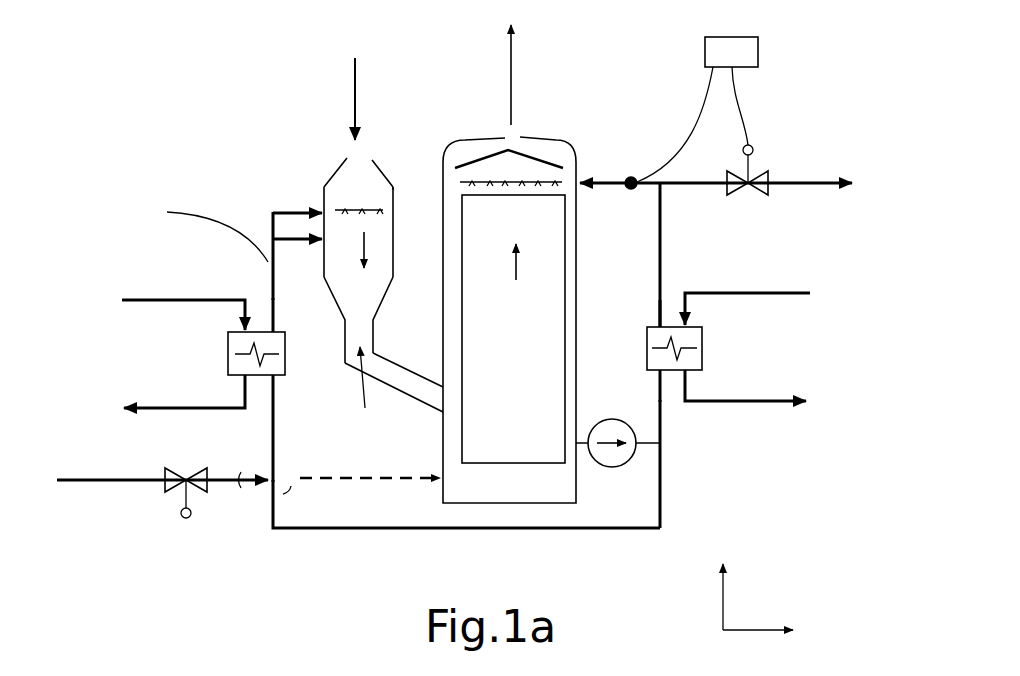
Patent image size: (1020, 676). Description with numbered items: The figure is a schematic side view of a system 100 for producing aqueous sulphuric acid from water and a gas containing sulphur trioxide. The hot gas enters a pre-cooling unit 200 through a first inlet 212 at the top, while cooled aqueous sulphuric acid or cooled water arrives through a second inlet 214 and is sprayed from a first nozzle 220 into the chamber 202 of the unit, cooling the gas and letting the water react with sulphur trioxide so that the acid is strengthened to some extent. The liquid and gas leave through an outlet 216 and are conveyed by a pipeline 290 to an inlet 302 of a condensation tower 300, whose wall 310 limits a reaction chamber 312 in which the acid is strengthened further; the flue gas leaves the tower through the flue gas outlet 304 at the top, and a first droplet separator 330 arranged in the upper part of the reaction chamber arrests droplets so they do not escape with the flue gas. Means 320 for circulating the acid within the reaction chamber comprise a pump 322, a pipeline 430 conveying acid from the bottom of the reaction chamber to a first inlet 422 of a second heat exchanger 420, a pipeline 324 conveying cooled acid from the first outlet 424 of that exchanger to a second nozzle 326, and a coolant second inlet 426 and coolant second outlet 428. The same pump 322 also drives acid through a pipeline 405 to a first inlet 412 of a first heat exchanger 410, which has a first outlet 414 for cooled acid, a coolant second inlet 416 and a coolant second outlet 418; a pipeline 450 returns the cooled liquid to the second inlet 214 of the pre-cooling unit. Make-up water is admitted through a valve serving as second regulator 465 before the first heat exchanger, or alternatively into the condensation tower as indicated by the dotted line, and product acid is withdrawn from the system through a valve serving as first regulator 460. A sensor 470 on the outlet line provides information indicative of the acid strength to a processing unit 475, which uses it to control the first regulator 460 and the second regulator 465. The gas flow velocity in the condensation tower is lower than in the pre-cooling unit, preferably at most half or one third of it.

The system 100 is at (222, 590).
The pre-cooling unit 200 is at (394, 228).
The reaction chamber 202 is at (352, 222).
The first inlet 212 is at (344, 154).
The second inlet 214 is at (320, 199).
The outlet 216 is at (349, 319).
The first nozzle 220 is at (363, 203).
The pipeline 290 is at (383, 355).
The condensation tower 300 is at (557, 143).
The inlet 302 is at (435, 396).
The flue outlet 304 is at (522, 129).
The wall 310 is at (578, 288).
The reaction chamber 312 is at (538, 346).
The means for circulating the aqueous sulphuric acid 320 is at (699, 453).
The pump 322 is at (633, 458).
The pipeline 324 is at (662, 243).
The second nozzle 326 is at (520, 182).
The first droplet separator 330 is at (497, 153).
The pipeline 405 is at (360, 528).
The first heat exchanger 410 is at (228, 363).
The first inlet 412 is at (272, 378).
The first outlet 414 is at (272, 330).
The second inlet 416 is at (243, 325).
The second outlet 418 is at (247, 378).
The second heat exchanger 420 is at (702, 355).
The first inlet 422 is at (665, 374).
The first outlet 424 is at (665, 323).
The second inlet 426 is at (689, 323).
The second outlet 428 is at (690, 373).
The pipeline 430 is at (660, 417).
The pipeline 450 is at (269, 264).
The first regulator 460 is at (763, 176).
The second regulator 465 is at (173, 490).
The sensor 470 is at (627, 190).
The processing unit 475 is at (752, 64).